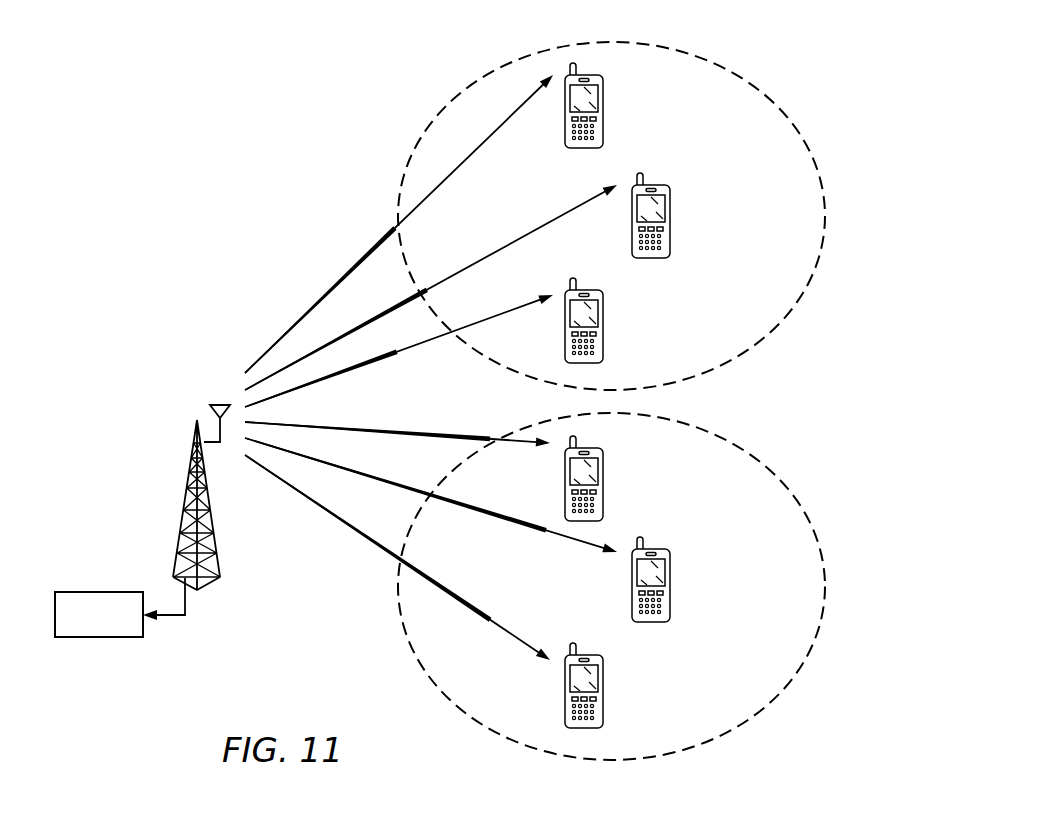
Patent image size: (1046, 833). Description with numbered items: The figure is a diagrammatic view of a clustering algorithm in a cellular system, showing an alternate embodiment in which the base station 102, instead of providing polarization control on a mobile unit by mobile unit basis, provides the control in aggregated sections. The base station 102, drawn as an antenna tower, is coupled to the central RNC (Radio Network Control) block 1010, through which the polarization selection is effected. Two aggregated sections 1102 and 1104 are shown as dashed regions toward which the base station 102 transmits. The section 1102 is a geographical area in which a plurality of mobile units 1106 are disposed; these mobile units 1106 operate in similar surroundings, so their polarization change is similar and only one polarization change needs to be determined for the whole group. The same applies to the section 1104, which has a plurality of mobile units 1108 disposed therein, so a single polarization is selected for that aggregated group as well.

The base station 102 is at (184, 507).
The RNC (Radio Network Control) block 1010 is at (97, 637).
The section 1102 is at (717, 63).
The section 1104 is at (717, 737).
The mobile units 1106 is at (603, 105).
The mobile units 1108 is at (603, 478).